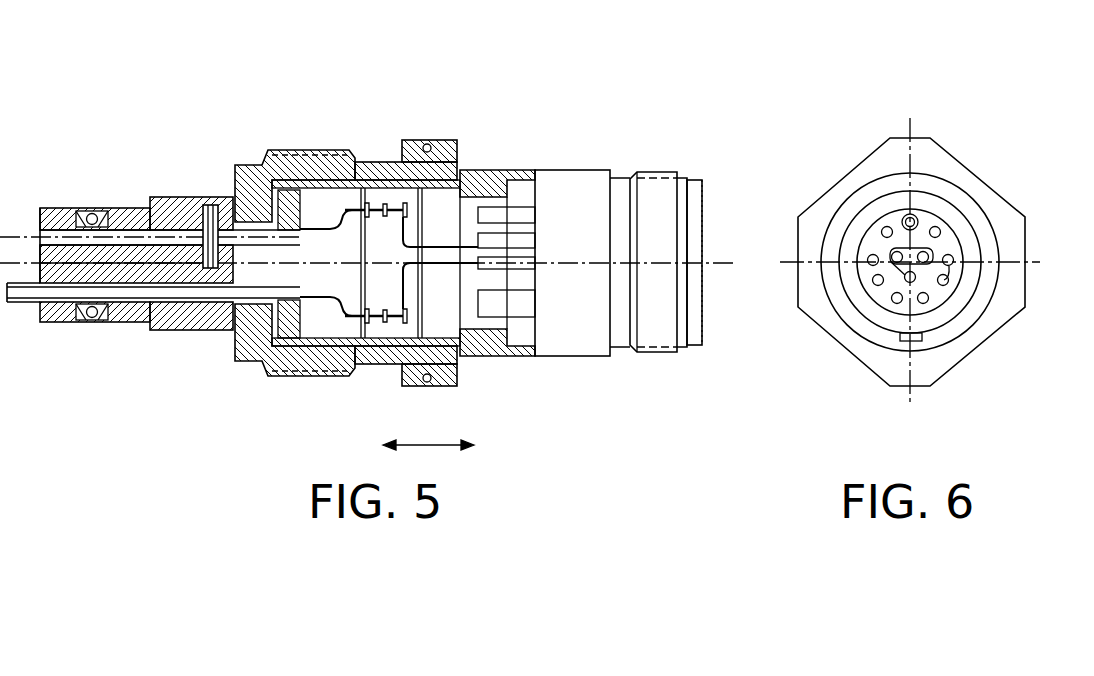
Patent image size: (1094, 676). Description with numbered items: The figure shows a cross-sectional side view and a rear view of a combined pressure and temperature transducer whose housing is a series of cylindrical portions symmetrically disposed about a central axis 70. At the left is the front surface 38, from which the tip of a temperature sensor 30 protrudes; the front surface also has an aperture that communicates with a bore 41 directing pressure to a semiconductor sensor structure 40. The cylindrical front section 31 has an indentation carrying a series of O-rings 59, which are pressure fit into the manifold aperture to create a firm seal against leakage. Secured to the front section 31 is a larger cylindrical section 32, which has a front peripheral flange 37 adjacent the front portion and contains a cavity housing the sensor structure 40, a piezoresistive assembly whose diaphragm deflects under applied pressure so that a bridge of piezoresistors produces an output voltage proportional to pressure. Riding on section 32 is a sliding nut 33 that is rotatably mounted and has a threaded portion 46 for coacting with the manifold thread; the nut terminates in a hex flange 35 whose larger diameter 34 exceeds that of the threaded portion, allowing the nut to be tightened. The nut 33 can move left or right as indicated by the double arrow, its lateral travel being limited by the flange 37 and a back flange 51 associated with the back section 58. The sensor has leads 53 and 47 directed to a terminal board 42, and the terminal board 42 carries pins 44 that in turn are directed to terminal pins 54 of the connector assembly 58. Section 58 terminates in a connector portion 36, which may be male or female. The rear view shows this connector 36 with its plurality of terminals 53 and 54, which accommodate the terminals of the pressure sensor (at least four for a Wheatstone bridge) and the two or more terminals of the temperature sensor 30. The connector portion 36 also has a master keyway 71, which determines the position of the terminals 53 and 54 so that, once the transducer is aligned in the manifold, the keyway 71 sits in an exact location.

In FIG. 5, the temperature sensor 30 is at (28, 303).
In FIG. 5, the front section 31 is at (122, 208).
In FIG. 5, the larger cylindrical section 32 is at (170, 332).
In FIG. 5, the sliding nut 33 is at (275, 378).
In FIG. 5, the larger diameter 34 is at (420, 140).
In FIG. 5, the hex flange 35 is at (418, 140).
In FIG. 6, the hex flange 35 is at (852, 162).
In FIG. 5, the connector portion 36 is at (655, 183).
In FIG. 6, the connector portion 36 is at (928, 220).
In FIG. 5, the front peripheral flange 37 is at (260, 165).
In FIG. 5, the front surface 38 is at (40, 224).
In FIG. 5, the semiconductor sensor structure 40 is at (222, 205).
In FIG. 5, the bore 41 is at (63, 236).
In FIG. 5, the terminal board 42 is at (375, 346).
In FIG. 5, the pins 44 is at (372, 203).
In FIG. 5, the threaded portion 46 is at (285, 150).
In FIG. 5, the lead 47 is at (298, 338).
In FIG. 5, the back flange 51 is at (470, 170).
In FIG. 5, the lead / terminal 53 is at (310, 223).
In FIG. 6, the lead / terminal 53 is at (935, 226).
In FIG. 5, the terminal pin 54 is at (505, 222).
In FIG. 6, the terminal pin 54 is at (948, 258).
In FIG. 5, the back section / connector assembly 58 is at (608, 170).
In FIG. 5, the O-rings 59 is at (89, 207).
In FIG. 5, the central axis 70 is at (713, 262).
In FIG. 6, the master keyway 71 is at (903, 337).